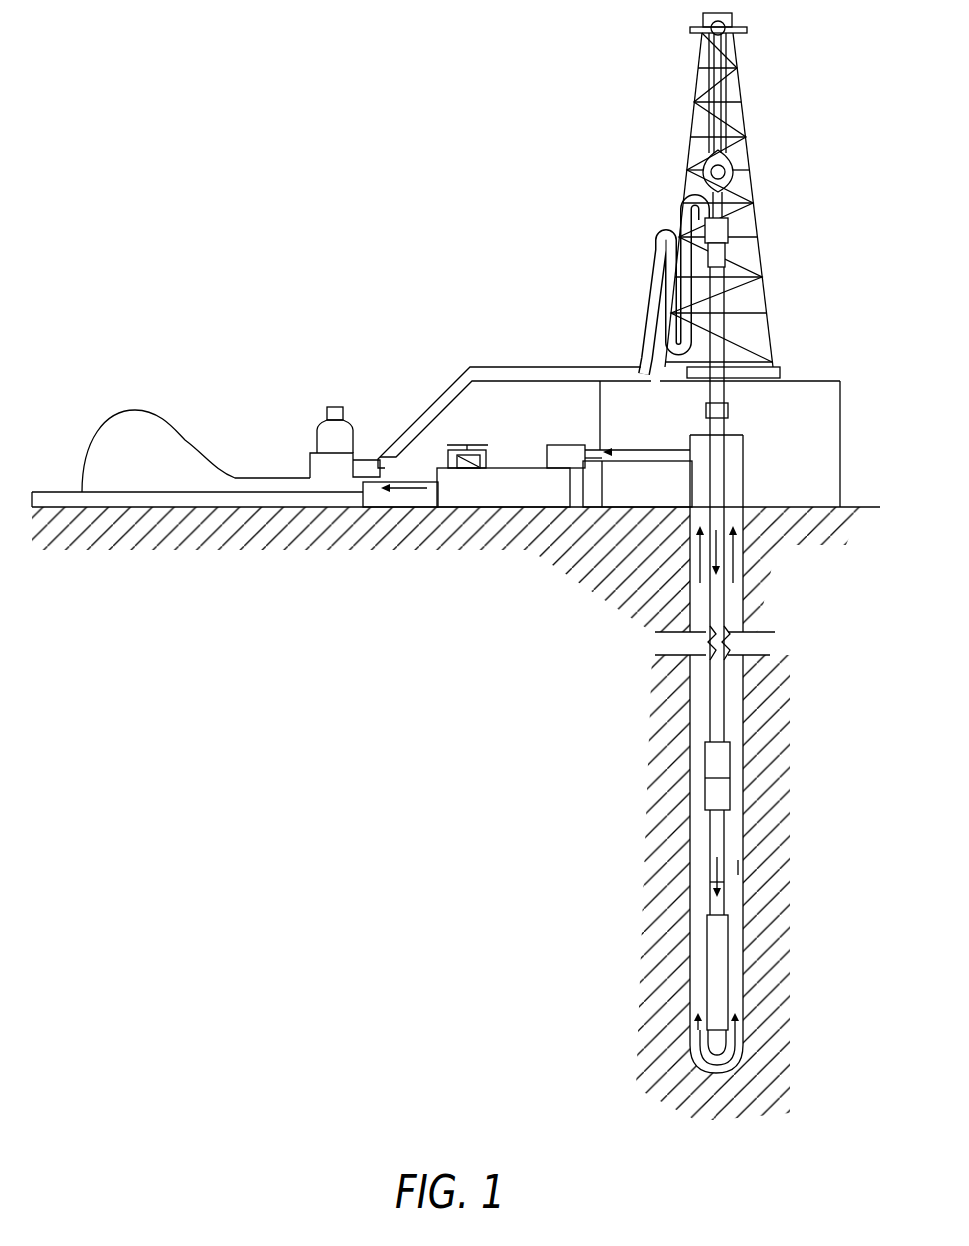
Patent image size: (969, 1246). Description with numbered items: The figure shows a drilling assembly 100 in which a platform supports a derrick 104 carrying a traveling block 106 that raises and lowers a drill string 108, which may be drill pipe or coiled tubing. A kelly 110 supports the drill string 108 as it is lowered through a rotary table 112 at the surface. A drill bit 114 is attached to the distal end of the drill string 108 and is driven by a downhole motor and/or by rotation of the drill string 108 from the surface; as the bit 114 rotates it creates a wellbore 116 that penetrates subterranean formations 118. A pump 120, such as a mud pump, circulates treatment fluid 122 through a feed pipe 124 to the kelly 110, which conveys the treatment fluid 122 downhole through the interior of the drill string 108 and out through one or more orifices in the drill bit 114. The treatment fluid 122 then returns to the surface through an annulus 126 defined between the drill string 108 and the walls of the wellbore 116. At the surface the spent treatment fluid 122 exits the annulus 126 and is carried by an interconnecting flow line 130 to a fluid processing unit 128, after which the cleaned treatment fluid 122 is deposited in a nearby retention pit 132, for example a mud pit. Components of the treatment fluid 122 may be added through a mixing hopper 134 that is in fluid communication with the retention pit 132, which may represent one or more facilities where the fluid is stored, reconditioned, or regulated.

The drilling assembly 100 is at (430, 93).
The derrick 104 is at (742, 92).
The traveling block 106 is at (730, 157).
The drill string 108 is at (748, 618).
The kelly 110 is at (725, 283).
The rotary table 112 is at (745, 372).
The drill bit 114 is at (736, 1060).
The wellbore 116 is at (743, 707).
The subterranean formations 118 is at (558, 745).
The pump 120 is at (157, 468).
The treatment fluid 122 is at (375, 461).
The feed pipe 124 is at (508, 363).
The annulus 126 is at (738, 867).
The fluid processing unit 128 is at (578, 445).
The flow line 130 is at (677, 463).
The retention pit 132 is at (545, 500).
The mixing hopper 134 is at (458, 472).